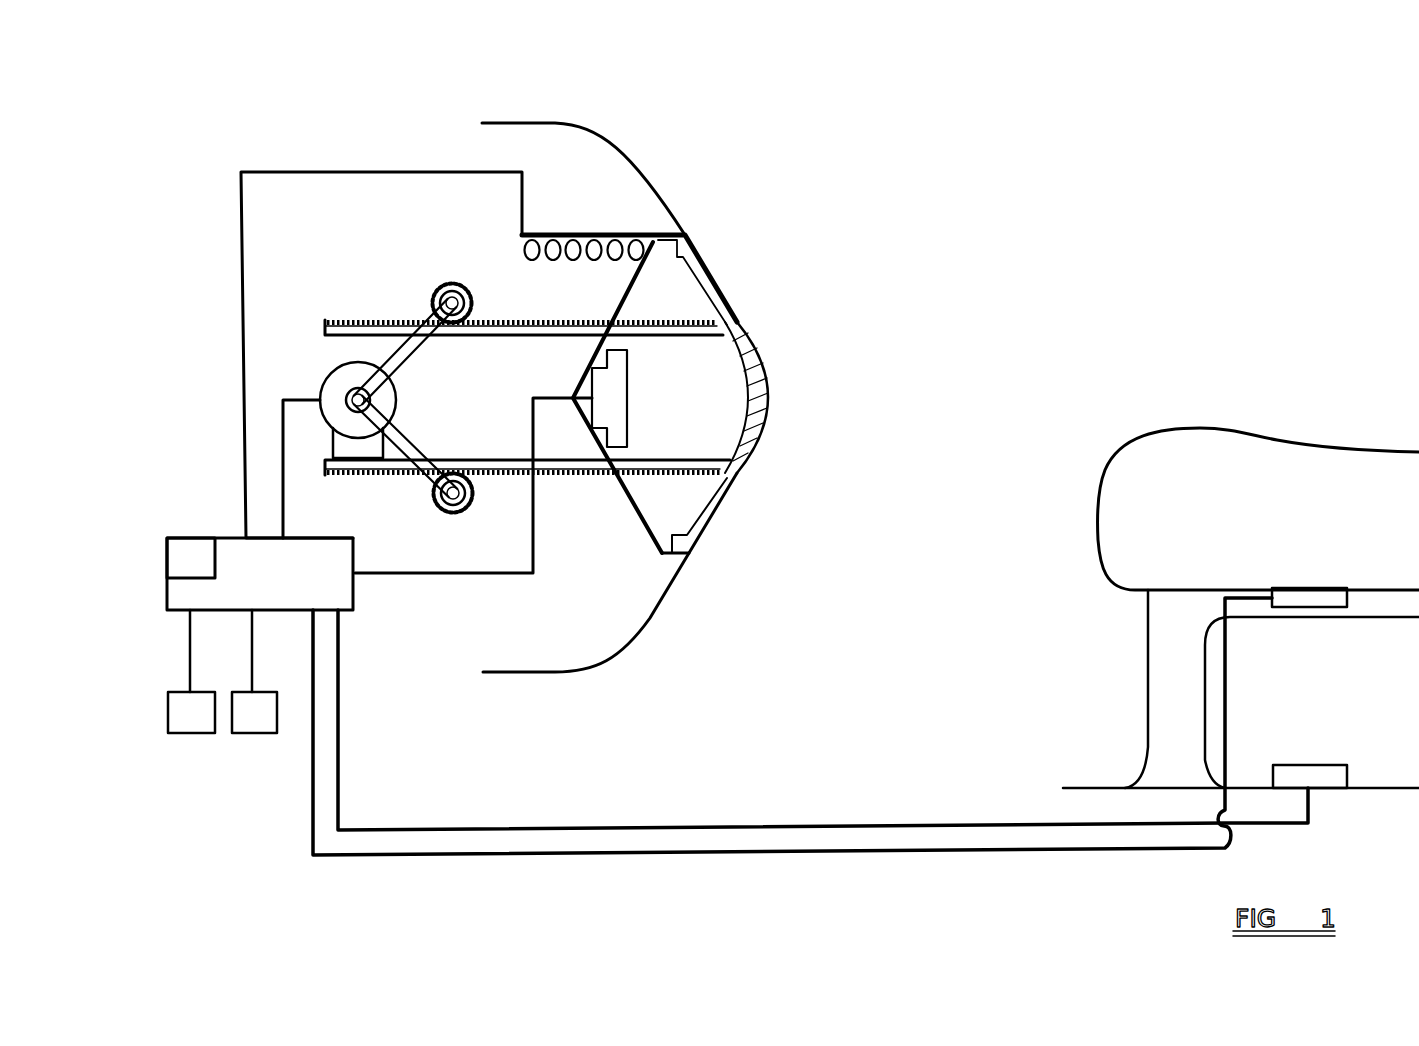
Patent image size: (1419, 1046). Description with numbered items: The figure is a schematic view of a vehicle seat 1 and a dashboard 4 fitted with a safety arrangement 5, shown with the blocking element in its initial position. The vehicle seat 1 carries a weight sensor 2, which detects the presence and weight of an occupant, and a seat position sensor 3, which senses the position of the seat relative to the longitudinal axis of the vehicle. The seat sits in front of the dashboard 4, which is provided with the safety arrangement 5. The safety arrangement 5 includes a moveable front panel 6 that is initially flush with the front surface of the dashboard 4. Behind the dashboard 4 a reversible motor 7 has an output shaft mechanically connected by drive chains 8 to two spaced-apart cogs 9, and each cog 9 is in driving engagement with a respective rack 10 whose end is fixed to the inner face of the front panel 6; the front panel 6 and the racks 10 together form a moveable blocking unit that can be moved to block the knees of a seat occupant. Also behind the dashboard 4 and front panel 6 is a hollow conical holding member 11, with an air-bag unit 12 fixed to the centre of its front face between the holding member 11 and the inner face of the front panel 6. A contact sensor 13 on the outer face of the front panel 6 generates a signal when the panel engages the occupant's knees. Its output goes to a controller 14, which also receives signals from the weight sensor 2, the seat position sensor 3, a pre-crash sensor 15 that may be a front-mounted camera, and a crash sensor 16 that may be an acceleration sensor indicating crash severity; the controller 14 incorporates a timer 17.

The vehicle seat 1 is at (1358, 398).
The weight sensor 2 is at (1315, 605).
The seat position sensor 3 is at (1338, 765).
The dashboard 4 is at (622, 140).
The safety arrangement 5 is at (464, 244).
The front panel 6 is at (713, 278).
The reversible motor 7 is at (320, 383).
The drive chains 8 is at (395, 365).
The cogs 9 is at (487, 458).
The racks 10 is at (563, 320).
The holding member 11 is at (642, 522).
The air-bag unit 12 is at (625, 420).
The contact sensor 13 is at (763, 380).
The controller 14 is at (233, 540).
The pre-crash sensor 15 is at (192, 735).
The crash sensor 16 is at (248, 735).
The timer 17 is at (183, 547).